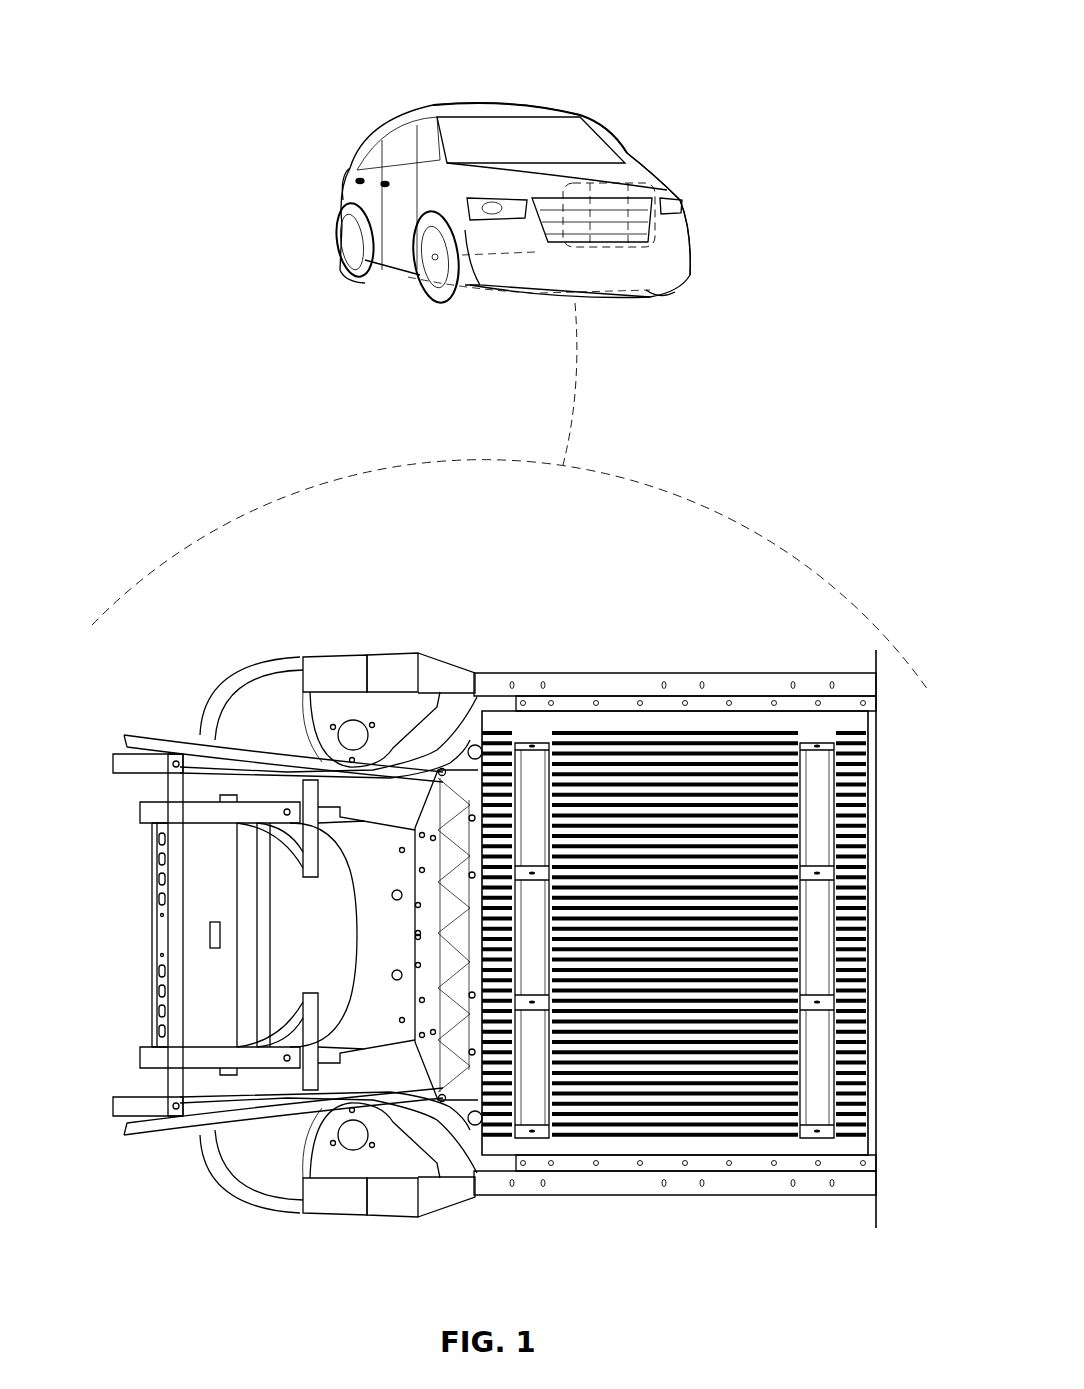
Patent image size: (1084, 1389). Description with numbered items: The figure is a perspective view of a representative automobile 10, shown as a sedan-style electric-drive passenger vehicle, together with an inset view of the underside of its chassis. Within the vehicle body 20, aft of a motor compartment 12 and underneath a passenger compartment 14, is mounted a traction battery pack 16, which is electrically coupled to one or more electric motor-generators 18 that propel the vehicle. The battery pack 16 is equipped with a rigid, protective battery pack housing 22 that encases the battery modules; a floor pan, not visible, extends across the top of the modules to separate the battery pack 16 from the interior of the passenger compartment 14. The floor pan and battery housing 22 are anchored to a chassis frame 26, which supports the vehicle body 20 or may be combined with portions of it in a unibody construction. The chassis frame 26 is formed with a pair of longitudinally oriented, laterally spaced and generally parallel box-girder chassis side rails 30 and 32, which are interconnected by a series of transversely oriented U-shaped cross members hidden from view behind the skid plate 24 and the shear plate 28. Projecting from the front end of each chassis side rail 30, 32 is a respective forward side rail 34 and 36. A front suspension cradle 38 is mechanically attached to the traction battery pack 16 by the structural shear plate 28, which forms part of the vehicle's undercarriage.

The automobile 10 is at (315, 113).
The motor compartment 12 is at (672, 182).
The passenger compartment 14 is at (590, 115).
The traction battery pack 16 is at (913, 688).
The electric motor-generator 18 is at (632, 150).
The vehicle body 20 is at (430, 98).
The battery pack housing 22 is at (583, 1175).
The skid plate 24 is at (767, 708).
The chassis frame 26 is at (508, 652).
The shear plate 28 is at (456, 752).
The chassis side rail 30 is at (648, 685).
The chassis side rail 32 is at (650, 1183).
The forward side rail 34 is at (140, 742).
The forward side rail 36 is at (153, 1115).
The front suspension cradle 38 is at (147, 937).